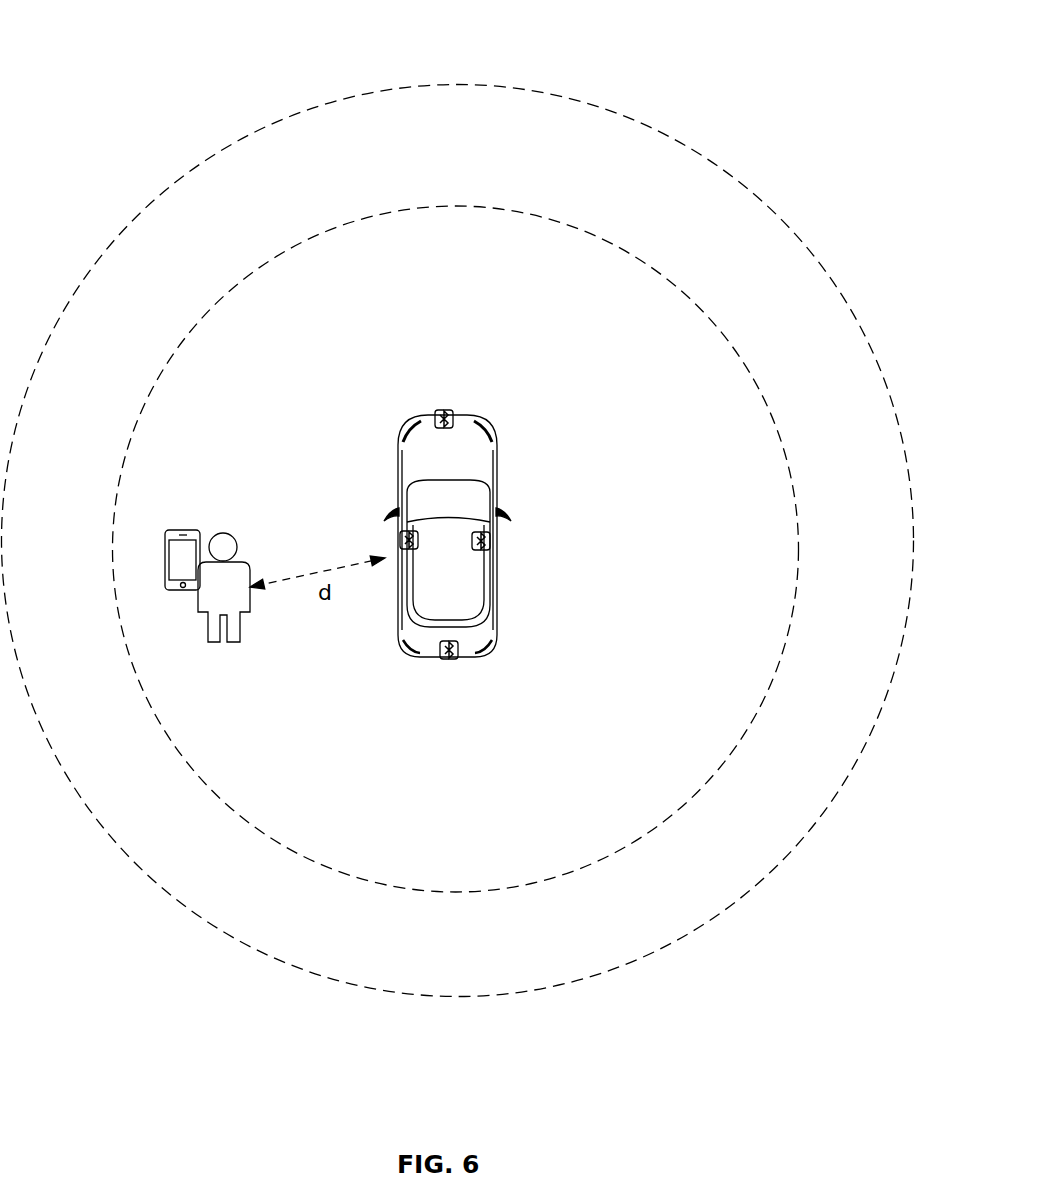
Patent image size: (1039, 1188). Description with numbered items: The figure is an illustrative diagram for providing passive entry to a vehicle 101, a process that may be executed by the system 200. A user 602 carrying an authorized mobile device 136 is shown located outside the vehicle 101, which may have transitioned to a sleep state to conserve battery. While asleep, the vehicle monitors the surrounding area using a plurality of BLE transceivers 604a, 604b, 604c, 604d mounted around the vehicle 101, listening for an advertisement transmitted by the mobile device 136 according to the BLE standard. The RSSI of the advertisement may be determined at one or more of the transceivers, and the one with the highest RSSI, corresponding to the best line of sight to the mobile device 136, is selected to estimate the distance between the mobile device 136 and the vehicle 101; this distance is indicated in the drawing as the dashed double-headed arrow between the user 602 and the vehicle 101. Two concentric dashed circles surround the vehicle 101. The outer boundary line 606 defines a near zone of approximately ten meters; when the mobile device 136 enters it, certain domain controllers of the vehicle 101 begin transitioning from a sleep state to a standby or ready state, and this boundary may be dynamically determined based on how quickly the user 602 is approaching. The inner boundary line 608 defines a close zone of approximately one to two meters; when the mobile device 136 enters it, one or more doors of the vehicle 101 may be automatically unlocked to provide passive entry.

The system 200 is at (146, 44).
The boundary line 606 is at (671, 136).
The boundary line 608 is at (588, 231).
The vehicle 101 is at (487, 648).
The BLE transceiver 604a is at (433, 417).
The BLE transceiver 604b is at (491, 541).
The BLE transceiver 604c is at (448, 662).
The BLE transceiver 604d is at (400, 539).
The user 602 is at (246, 562).
The mobile device 136 is at (193, 530).